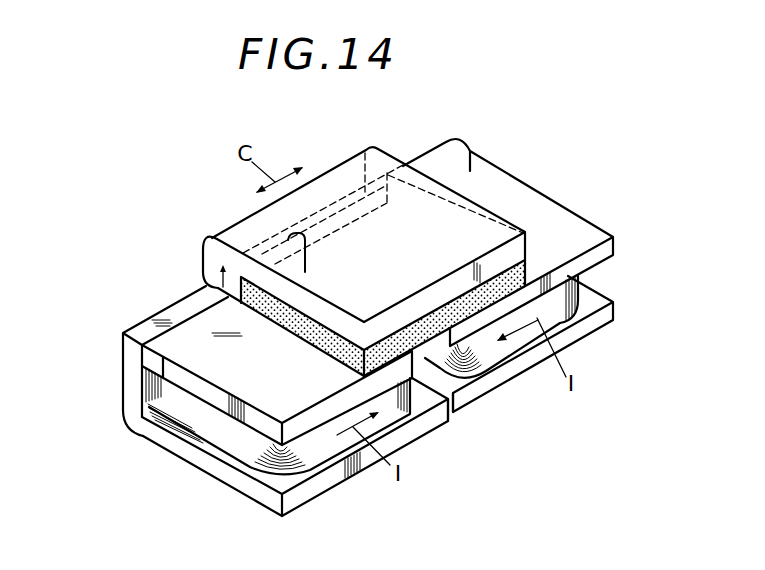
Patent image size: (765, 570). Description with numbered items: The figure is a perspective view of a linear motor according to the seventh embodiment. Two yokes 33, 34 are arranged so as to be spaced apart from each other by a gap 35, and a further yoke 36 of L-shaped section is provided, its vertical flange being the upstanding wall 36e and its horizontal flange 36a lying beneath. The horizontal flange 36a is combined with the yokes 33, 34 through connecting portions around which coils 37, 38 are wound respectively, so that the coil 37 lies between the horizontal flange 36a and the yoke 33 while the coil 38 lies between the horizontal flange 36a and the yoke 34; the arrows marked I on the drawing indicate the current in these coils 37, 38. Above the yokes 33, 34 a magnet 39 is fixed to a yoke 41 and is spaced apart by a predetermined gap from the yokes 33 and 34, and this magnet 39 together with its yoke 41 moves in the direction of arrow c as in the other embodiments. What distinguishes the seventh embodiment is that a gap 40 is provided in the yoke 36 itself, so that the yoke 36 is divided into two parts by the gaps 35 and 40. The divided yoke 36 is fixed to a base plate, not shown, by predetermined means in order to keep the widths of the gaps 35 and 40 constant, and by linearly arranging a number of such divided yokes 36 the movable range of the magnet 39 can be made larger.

The yoke 33 is at (168, 364).
The yoke 34 is at (562, 216).
The gap 35 is at (510, 343).
The yoke 36 is at (247, 409).
The horizontal flange 36a is at (231, 476).
The vertical flange 36e is at (128, 352).
The coil 37 is at (223, 435).
The coil 38 is at (550, 320).
The magnet 39 is at (321, 345).
The gap 40 is at (458, 412).
The yoke 41 is at (210, 253).